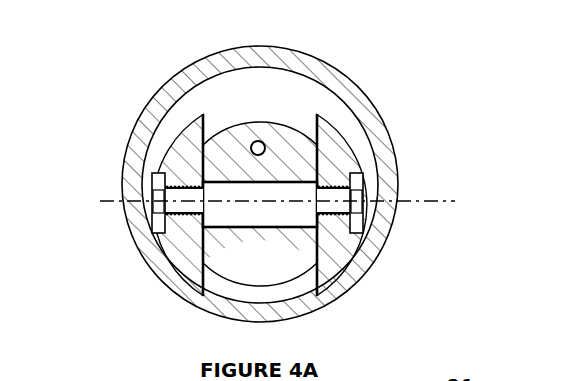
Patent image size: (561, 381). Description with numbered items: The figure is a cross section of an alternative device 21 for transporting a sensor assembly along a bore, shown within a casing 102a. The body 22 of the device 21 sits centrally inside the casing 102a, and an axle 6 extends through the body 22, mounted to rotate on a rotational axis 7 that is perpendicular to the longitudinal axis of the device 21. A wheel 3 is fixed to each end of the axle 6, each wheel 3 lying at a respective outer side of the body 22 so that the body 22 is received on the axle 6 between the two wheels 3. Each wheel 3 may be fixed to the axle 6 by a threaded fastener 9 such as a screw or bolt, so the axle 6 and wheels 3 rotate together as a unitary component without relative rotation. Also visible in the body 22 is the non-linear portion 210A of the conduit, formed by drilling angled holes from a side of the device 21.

The casing 102a is at (167, 90).
The device 21 is at (276, 98).
The wheel 3 is at (319, 128).
The rotational axis 7 is at (430, 200).
The non-linear portion of the conduit 210A is at (251, 148).
The threaded fastener 9 is at (160, 223).
The body 22 is at (257, 248).
The axle 6 is at (275, 208).